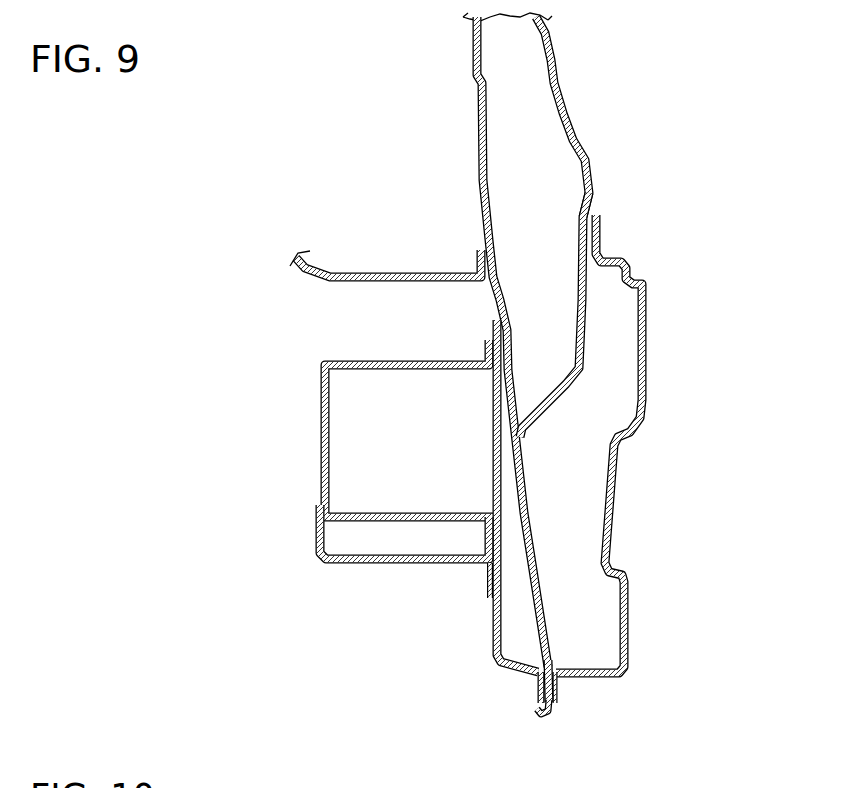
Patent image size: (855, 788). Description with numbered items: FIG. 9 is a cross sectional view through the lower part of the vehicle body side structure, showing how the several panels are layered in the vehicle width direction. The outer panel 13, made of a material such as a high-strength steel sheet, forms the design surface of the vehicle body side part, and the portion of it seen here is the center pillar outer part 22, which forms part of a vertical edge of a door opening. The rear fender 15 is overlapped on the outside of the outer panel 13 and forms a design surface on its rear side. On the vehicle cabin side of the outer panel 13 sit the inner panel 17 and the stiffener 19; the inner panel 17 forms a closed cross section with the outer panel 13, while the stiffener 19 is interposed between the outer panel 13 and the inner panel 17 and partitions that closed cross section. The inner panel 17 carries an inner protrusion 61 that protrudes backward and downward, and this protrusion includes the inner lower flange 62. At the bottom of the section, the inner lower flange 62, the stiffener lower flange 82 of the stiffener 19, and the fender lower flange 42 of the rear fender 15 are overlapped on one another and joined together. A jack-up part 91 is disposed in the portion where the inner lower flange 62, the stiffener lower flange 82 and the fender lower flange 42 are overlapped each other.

In FIG. 9, the outer panel 13 is at (611, 190).
In FIG. 9, the rear fender 15 is at (662, 413).
In FIG. 9, the inner panel 17 is at (480, 546).
In FIG. 10, the inner panel 17 is at (258, 778).
In FIG. 9, the stiffener 19 is at (500, 474).
In FIG. 9, the center pillar outer part 22 is at (588, 330).
In FIG. 9, the fender lower flange 42 is at (557, 688).
In FIG. 9, the inner protrusion 61 is at (485, 583).
In FIG. 9, the inner lower flange 62 is at (537, 690).
In FIG. 9, the stiffener lower flange 82 is at (556, 706).
In FIG. 9, the jack-up part 91 is at (540, 718).